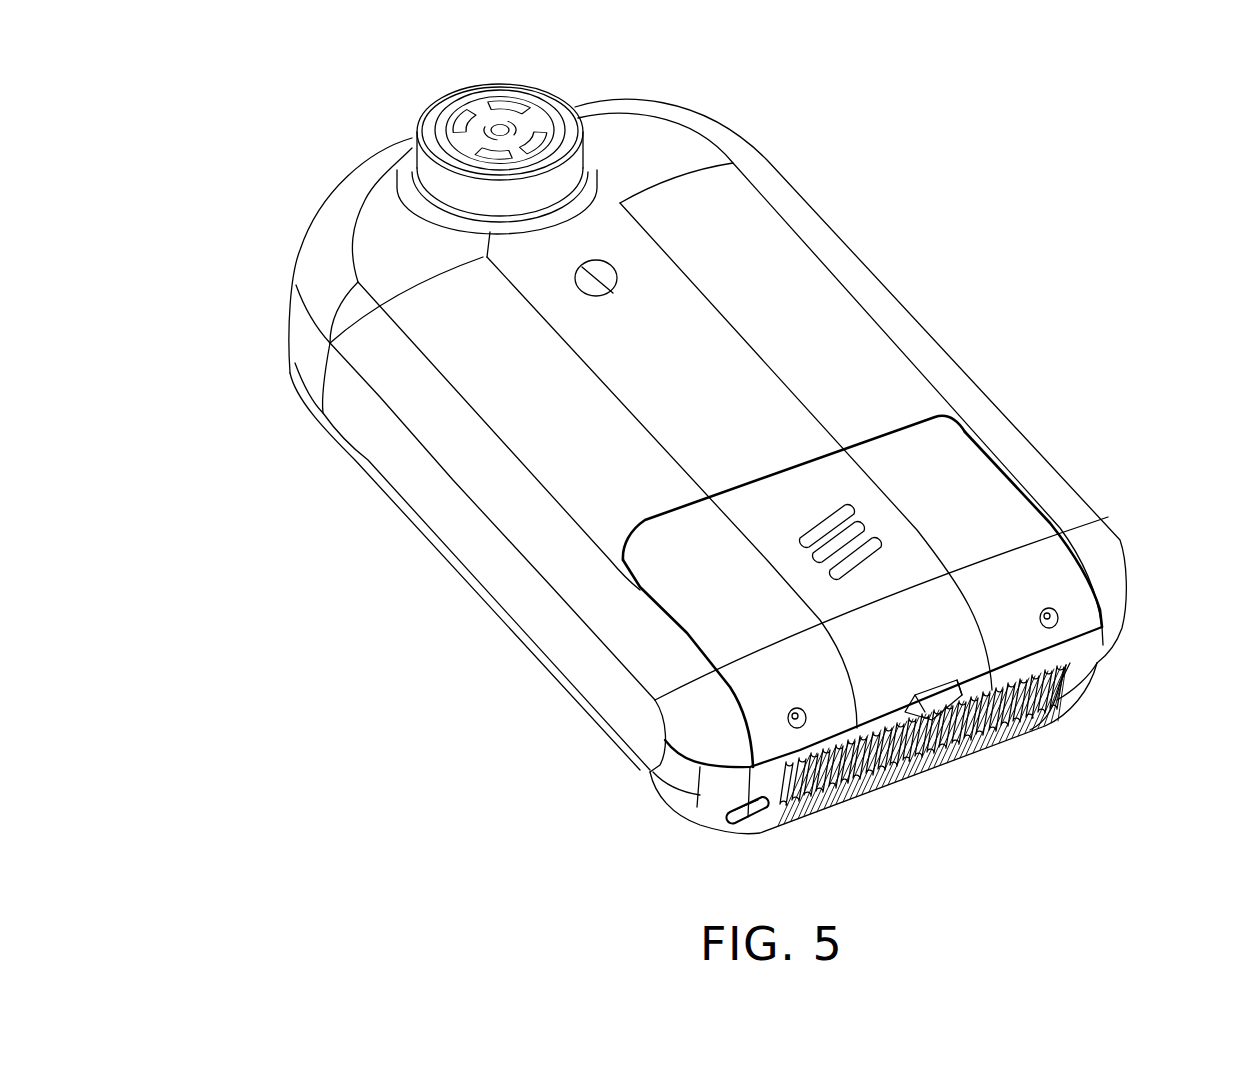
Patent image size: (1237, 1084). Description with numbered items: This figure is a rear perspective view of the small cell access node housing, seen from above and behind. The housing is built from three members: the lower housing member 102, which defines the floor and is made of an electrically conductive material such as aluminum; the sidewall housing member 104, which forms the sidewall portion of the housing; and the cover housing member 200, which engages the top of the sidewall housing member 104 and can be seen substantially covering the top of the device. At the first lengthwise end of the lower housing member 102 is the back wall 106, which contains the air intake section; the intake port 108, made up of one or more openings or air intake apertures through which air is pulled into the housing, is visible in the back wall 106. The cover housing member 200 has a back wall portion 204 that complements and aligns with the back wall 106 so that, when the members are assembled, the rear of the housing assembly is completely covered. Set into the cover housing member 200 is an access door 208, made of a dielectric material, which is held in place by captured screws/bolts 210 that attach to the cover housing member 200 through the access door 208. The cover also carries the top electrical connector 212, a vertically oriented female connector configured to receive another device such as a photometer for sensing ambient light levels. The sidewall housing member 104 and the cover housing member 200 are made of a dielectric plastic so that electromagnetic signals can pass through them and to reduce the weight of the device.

The cover housing member 200 is at (852, 244).
The lower housing member 102 is at (661, 809).
The sidewall housing member 104 is at (289, 318).
The back wall 106 is at (768, 782).
The intake port 108 is at (843, 780).
The back wall portion 204 is at (1110, 565).
The access door 208 is at (943, 490).
The captured screws/bolts 210 is at (789, 712).
The top electrical connector 212 is at (527, 108).